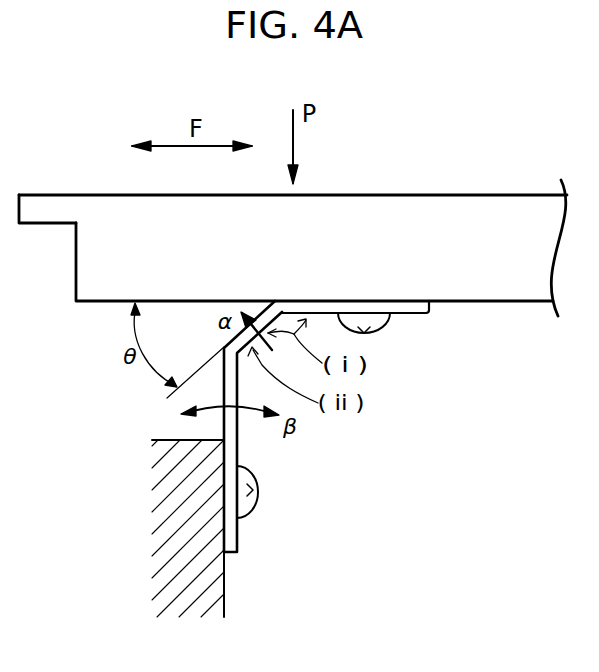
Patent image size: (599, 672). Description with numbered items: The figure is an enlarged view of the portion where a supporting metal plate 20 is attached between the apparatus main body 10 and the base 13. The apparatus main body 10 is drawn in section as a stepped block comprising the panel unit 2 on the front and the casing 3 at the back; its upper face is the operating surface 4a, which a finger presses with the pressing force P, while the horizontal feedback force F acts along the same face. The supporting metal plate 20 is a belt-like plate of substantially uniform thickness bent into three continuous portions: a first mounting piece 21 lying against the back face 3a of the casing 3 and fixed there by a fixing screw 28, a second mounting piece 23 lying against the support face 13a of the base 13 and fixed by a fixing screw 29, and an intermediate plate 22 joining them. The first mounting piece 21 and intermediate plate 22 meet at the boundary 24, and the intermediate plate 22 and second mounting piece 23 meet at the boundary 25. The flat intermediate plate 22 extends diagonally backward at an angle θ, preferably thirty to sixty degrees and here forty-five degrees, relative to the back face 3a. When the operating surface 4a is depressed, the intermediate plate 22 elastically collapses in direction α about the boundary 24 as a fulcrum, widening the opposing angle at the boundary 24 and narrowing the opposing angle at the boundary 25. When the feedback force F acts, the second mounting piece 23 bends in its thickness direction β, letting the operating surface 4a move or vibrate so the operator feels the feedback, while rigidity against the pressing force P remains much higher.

The panel unit 2 is at (52, 207).
The casing 3 is at (92, 270).
The back face of the casing 3a is at (512, 303).
The operating surface 4a is at (390, 194).
The apparatus main body 10 is at (473, 189).
The base 13 is at (167, 503).
The support face of the base 13a is at (227, 583).
The supporting metal plate 20 is at (246, 442).
The first mounting piece 21 is at (424, 314).
The intermediate plate 22 is at (268, 303).
The second mounting piece 23 is at (221, 384).
The boundary 24 is at (280, 304).
The boundary 25 is at (222, 345).
The fixing screw 28 is at (380, 336).
The fixing screw 29 is at (259, 500).